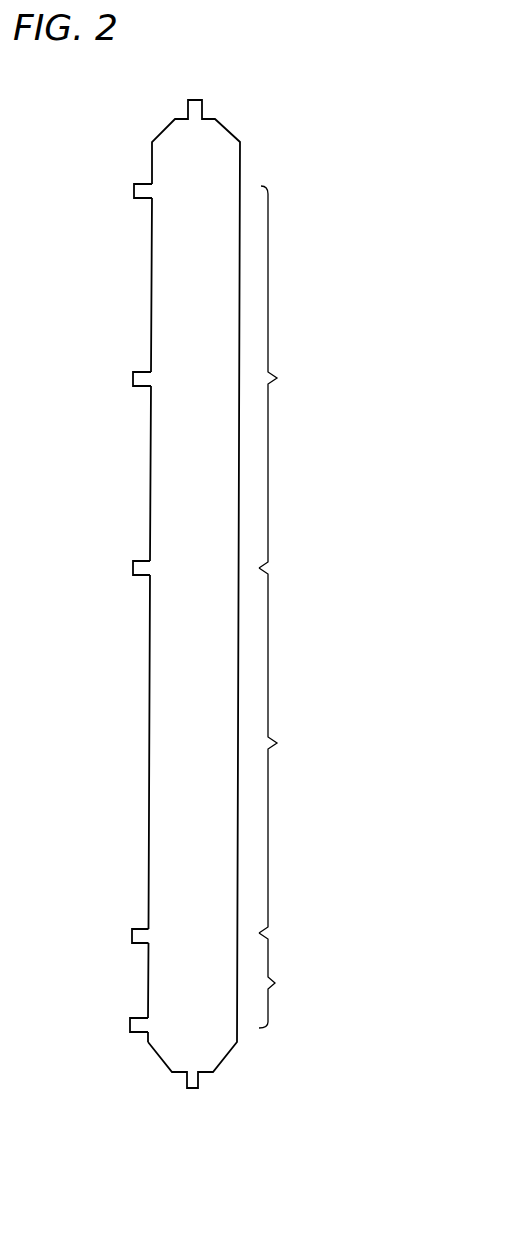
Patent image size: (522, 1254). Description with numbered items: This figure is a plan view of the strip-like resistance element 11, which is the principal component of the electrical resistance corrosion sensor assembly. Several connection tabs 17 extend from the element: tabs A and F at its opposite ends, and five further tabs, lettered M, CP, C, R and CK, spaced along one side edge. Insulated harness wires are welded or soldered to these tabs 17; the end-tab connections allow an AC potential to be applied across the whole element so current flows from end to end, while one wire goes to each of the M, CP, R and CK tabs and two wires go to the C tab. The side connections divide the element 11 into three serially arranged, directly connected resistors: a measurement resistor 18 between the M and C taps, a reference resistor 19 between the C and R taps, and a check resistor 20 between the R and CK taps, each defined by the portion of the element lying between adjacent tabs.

The strip-like resistance element 11 is at (224, 517).
The connection tabs 17 is at (202, 107).
The measurement resistor 18 is at (324, 377).
The reference resistor 19 is at (306, 750).
The check resistor 20 is at (324, 983).